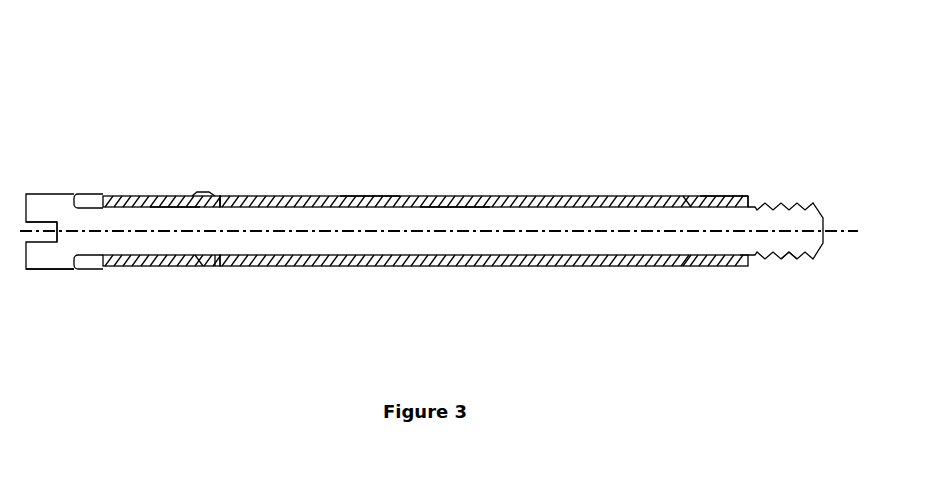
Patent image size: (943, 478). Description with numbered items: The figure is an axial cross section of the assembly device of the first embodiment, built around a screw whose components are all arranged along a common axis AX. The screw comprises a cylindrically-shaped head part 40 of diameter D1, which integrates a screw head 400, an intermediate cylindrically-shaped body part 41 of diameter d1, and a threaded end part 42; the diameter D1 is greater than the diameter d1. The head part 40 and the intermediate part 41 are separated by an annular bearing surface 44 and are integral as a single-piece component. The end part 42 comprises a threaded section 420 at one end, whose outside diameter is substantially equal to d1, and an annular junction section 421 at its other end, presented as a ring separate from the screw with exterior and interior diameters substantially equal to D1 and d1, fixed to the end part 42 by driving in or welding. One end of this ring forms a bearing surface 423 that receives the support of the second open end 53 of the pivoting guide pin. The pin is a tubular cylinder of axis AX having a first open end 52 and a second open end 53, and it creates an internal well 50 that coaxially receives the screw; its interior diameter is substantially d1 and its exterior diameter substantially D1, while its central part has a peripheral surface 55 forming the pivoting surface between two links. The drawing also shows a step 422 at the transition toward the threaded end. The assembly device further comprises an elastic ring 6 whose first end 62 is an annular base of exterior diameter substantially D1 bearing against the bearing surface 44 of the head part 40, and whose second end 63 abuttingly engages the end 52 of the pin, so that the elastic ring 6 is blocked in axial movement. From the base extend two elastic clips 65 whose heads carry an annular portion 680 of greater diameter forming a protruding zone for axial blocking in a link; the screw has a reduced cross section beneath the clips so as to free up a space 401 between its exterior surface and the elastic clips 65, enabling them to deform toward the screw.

The screw head 400 is at (42, 203).
The head part 40 is at (61, 213).
The annular bearing surface 44 is at (73, 197).
The space 401 is at (172, 207).
The annular portion 680 is at (203, 192).
The first open end 52 is at (221, 196).
The internal well 50 is at (325, 207).
The peripheral surface 55 is at (370, 196).
The intermediate part 41 is at (453, 220).
The second open end 53 is at (685, 200).
The annular junction section 421 is at (723, 196).
The shoulder of threaded portion 422 is at (747, 207).
The threaded end part 42 is at (788, 218).
The threaded section 420 is at (815, 254).
The bearing surface 423 is at (688, 260).
The first end 62 is at (80, 262).
The elastic ring 6 is at (126, 267).
The elastic clips 65 is at (162, 262).
The second end 63 is at (213, 258).
The axis AX is at (850, 230).
The diameter D1 is at (55, 122).
The diameter d1 is at (499, 122).